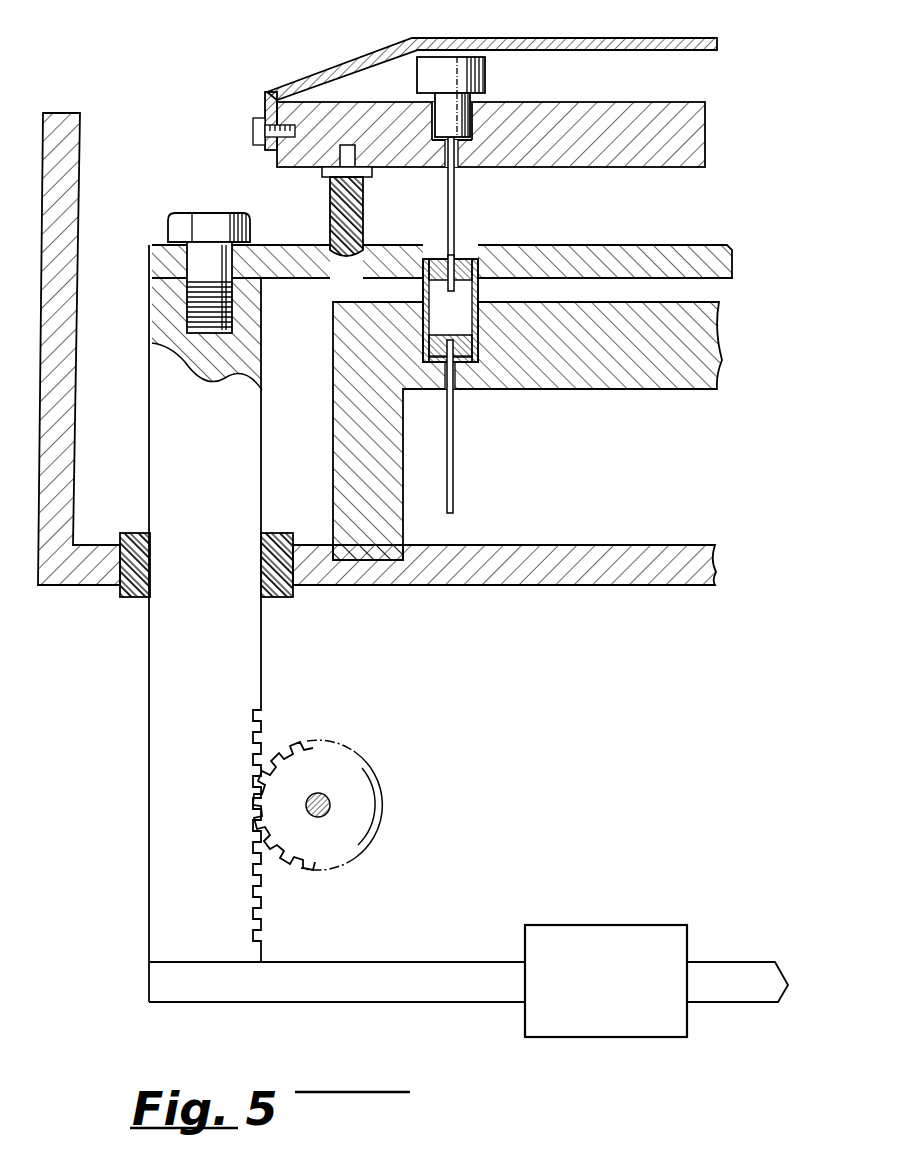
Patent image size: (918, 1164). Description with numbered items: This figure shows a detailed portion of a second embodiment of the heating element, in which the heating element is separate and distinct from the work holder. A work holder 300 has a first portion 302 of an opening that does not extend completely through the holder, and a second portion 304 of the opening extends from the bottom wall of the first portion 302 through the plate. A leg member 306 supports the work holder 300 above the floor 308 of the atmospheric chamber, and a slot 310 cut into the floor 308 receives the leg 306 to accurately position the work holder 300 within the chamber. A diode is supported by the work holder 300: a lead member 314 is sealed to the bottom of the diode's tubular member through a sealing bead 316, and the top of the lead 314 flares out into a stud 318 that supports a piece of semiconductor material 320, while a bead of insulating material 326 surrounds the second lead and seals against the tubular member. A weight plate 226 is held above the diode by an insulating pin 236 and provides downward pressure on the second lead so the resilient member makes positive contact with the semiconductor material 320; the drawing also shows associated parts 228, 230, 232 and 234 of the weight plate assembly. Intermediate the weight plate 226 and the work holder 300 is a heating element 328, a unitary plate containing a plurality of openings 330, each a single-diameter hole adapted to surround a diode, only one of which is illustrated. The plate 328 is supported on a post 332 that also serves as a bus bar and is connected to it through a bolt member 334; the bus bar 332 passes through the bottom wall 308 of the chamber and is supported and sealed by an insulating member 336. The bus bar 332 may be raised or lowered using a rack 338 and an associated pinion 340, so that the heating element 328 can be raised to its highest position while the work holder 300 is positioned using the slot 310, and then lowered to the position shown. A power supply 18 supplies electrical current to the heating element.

The power supply 18 is at (647, 923).
The weight plate 226 is at (633, 168).
The bore 228 is at (462, 160).
The nut 230 is at (473, 118).
The adjusting screw 232 is at (490, 78).
The cover plate 234 is at (588, 40).
The insulating pin 236 is at (364, 212).
The work holder 300 is at (617, 386).
The first portion of opening 302 is at (480, 338).
The second portion of opening 304 is at (457, 374).
The leg member 306 is at (398, 532).
The floor 308 is at (525, 545).
The slot 310 is at (392, 562).
The lead member 314 is at (455, 445).
The sealing bead 316 is at (480, 347).
The stud 318 is at (422, 352).
The semiconductor material 320 is at (426, 333).
The bead of insulating material 326 is at (462, 262).
The heating element 328 is at (652, 246).
The opening 330 is at (488, 250).
The post 332 is at (256, 466).
The bolt member 334 is at (190, 213).
The insulating member 336 is at (293, 596).
The rack 338 is at (258, 742).
The pinion 340 is at (352, 773).